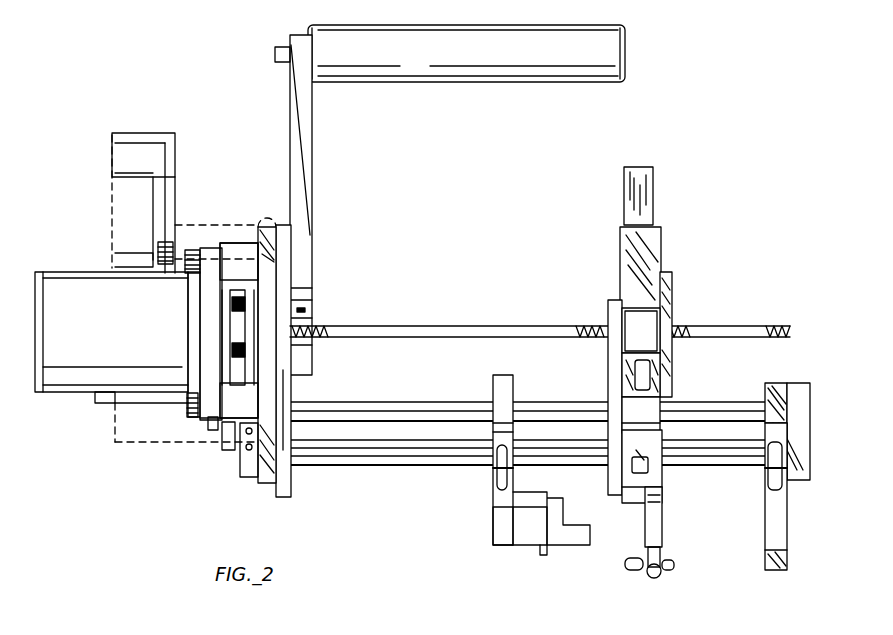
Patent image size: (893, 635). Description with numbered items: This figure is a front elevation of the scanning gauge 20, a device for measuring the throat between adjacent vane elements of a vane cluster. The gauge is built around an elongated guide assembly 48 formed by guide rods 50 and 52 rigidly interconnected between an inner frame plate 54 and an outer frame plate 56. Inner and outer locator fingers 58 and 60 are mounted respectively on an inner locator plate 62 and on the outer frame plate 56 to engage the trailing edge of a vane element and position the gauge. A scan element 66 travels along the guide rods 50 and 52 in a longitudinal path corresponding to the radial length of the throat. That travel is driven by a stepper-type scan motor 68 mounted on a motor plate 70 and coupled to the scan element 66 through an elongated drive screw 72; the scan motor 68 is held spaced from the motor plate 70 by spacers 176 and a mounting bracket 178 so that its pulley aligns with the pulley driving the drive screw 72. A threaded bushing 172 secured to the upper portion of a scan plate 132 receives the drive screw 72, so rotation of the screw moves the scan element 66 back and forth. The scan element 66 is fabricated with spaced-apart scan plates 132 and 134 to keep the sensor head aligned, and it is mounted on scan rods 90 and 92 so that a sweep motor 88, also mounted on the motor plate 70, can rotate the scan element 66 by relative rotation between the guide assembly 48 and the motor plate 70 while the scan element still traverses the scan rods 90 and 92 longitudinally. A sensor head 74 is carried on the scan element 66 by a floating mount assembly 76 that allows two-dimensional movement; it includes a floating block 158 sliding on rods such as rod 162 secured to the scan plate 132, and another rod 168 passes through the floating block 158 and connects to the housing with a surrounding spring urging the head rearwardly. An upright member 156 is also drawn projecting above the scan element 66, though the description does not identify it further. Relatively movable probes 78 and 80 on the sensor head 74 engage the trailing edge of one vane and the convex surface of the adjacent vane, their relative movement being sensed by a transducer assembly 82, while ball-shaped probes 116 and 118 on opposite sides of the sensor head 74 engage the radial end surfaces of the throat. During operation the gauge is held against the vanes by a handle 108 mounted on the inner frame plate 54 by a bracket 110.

The scanning gauge 20 is at (674, 108).
The elongated guide assembly 48 is at (764, 397).
The guide rod 50 is at (420, 405).
The guide rod 52 is at (572, 450).
The inner frame plate 54 is at (291, 478).
The outer frame plate 56 is at (808, 372).
The inner locator finger 58 is at (548, 545).
The outer locator finger 60 is at (765, 560).
The inner locator plate 62 is at (501, 375).
The scan element 66 is at (688, 266).
The scan motor 68 is at (124, 343).
The motor plate 70 is at (287, 218).
The drive screw 72 is at (368, 325).
The sensor head 74 is at (666, 400).
The floating mount assembly 76 is at (640, 350).
The probe 78 is at (662, 500).
The probe 80 is at (662, 520).
The transducer assembly 82 is at (672, 300).
The sweep motor 88 is at (100, 403).
The scan rod 90 is at (415, 455).
The scan rod 92 is at (430, 466).
The handle 108 is at (492, 53).
The bracket 110 is at (310, 135).
The ball-shaped probe 116 is at (625, 564).
The ball-shaped probe 118 is at (674, 565).
The scan plate 132 is at (608, 305).
The scan plate 134 is at (672, 320).
The post 156 is at (648, 185).
The floating block 158 is at (625, 388).
The rod 162 is at (648, 465).
The rod 168 is at (656, 360).
The threaded bushing 172 is at (648, 302).
The spacers 176 is at (232, 271).
The mounting bracket 178 is at (200, 297).